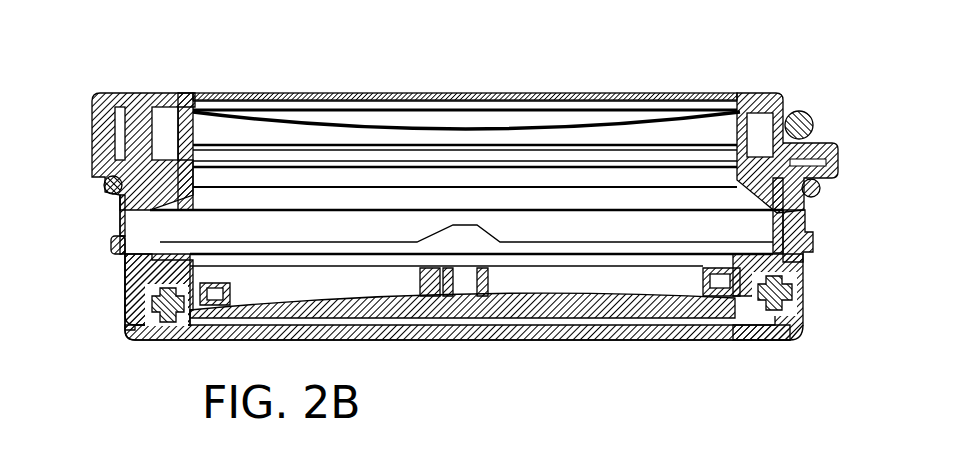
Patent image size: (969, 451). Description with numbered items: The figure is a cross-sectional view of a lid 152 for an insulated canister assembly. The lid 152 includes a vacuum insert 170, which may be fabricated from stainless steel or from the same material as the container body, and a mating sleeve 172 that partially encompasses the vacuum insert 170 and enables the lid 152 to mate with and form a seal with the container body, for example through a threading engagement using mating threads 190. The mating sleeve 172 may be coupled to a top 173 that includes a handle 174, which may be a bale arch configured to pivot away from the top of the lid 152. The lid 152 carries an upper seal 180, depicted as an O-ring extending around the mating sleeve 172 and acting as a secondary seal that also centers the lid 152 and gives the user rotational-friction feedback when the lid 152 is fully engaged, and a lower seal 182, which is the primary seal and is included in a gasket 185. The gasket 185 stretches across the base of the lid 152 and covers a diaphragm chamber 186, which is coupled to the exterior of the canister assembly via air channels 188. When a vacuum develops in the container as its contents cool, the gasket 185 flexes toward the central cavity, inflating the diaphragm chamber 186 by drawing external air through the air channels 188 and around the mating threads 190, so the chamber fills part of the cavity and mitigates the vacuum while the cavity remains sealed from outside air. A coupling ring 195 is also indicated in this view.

The lid 152 is at (714, 58).
The vacuum insert 170 is at (595, 145).
The mating sleeve 172 is at (805, 213).
The top 173 is at (262, 95).
The handle 174 is at (813, 122).
The upper seal 180 is at (105, 184).
The lower seal 182 is at (790, 338).
The gasket 185 is at (655, 342).
The diaphragm chamber 186 is at (465, 285).
The air channels 188 is at (196, 306).
The mating threads 190 is at (115, 244).
The coupling ring 195 is at (805, 290).